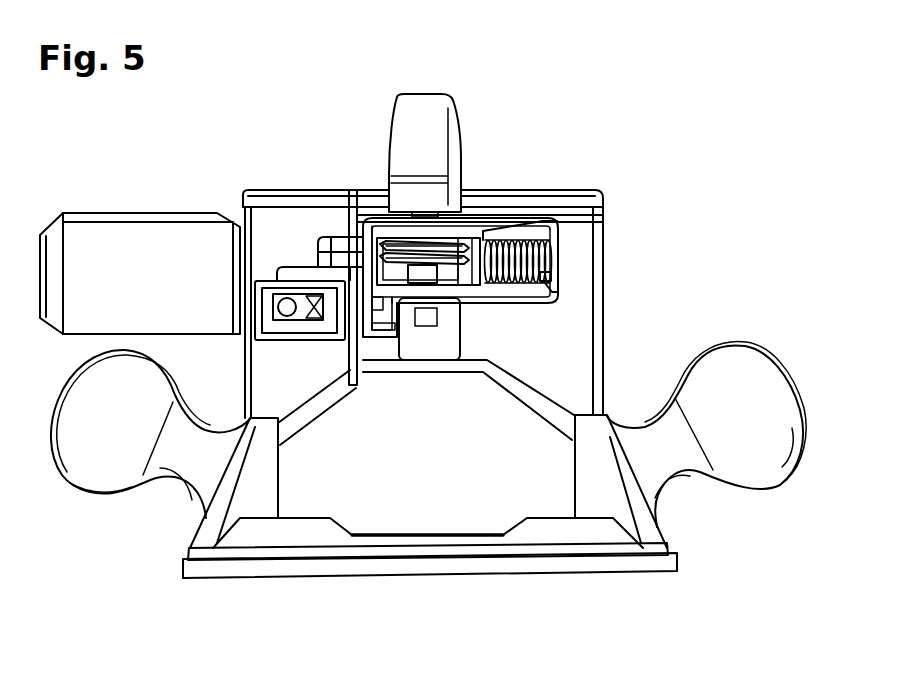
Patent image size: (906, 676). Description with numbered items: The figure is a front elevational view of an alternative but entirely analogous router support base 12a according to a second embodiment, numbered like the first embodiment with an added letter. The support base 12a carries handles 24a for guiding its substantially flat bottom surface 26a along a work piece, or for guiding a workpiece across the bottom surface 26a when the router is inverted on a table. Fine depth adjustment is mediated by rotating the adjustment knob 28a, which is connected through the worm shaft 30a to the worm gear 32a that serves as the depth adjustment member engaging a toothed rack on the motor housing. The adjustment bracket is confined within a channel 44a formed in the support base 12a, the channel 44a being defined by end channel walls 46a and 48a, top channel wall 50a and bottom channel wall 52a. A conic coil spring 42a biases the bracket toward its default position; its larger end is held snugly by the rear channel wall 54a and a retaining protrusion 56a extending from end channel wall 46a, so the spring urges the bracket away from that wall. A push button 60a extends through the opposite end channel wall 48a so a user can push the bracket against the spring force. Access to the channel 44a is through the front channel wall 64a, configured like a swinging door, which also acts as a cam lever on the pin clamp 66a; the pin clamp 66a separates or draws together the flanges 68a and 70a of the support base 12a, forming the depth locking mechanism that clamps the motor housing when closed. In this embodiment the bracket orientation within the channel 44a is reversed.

The support base 12a is at (225, 129).
The handles 24a is at (738, 356).
The bottom surface 26a is at (612, 575).
The adjustment knob 28a is at (440, 121).
The worm shaft 30a is at (434, 277).
The worm gear 32a is at (476, 268).
The coil spring 42a is at (535, 257).
The channel 44a is at (500, 222).
The end channel wall 46a is at (553, 279).
The end channel wall 48a is at (348, 238).
The top channel wall 50a is at (466, 238).
The bottom channel wall 52a is at (482, 302).
The rear channel wall 54a is at (522, 236).
The retaining protrusion 56a is at (557, 296).
The push button 60a is at (330, 243).
The front channel wall 64a is at (148, 235).
The pin clamp 66a is at (247, 322).
The flange 68a is at (372, 362).
The flange 70a is at (348, 368).